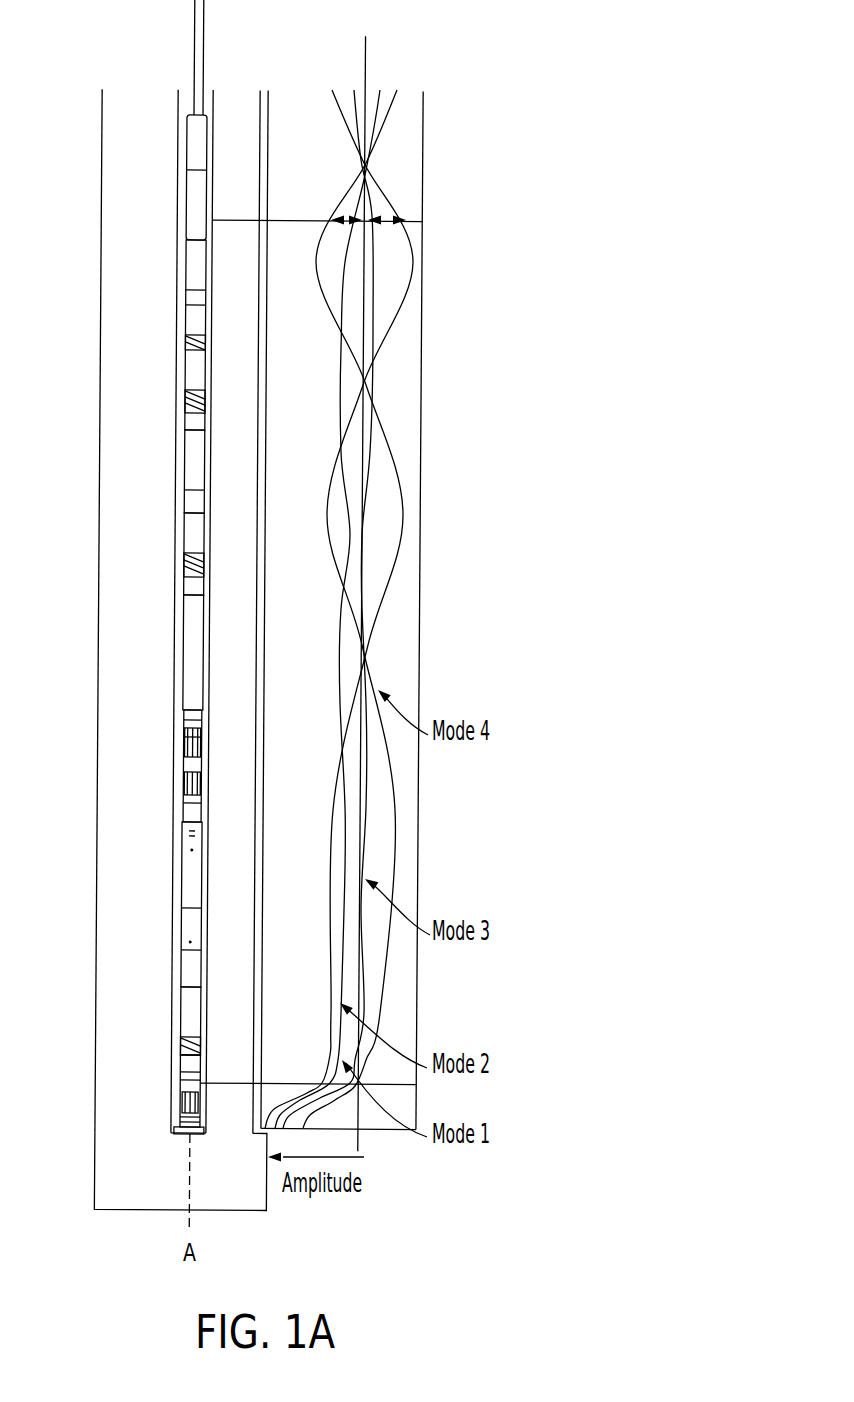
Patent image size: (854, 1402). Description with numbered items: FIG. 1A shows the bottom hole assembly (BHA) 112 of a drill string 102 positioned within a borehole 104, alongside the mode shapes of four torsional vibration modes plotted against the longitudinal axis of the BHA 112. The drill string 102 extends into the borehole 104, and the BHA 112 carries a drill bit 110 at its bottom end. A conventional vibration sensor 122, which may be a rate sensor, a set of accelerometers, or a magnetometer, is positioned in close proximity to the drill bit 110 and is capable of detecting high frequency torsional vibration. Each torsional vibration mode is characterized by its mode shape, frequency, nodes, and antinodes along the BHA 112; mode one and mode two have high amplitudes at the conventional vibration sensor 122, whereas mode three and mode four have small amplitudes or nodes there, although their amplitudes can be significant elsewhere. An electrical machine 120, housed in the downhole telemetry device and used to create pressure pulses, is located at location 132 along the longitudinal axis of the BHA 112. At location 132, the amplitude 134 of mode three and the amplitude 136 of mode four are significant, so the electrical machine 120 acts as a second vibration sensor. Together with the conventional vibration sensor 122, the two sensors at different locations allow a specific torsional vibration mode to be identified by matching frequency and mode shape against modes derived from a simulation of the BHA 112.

The drill string 102 is at (185, 105).
The electrical machine 120 is at (197, 210).
The bottom hole assembly 112 is at (185, 467).
The borehole 104 is at (185, 575).
The conventional vibration sensor 122 is at (187, 1082).
The drill bit 110 is at (175, 1134).
The location 132 is at (216, 212).
The amplitude of mode 3 134 is at (347, 222).
The amplitude of mode 4 136 is at (387, 218).